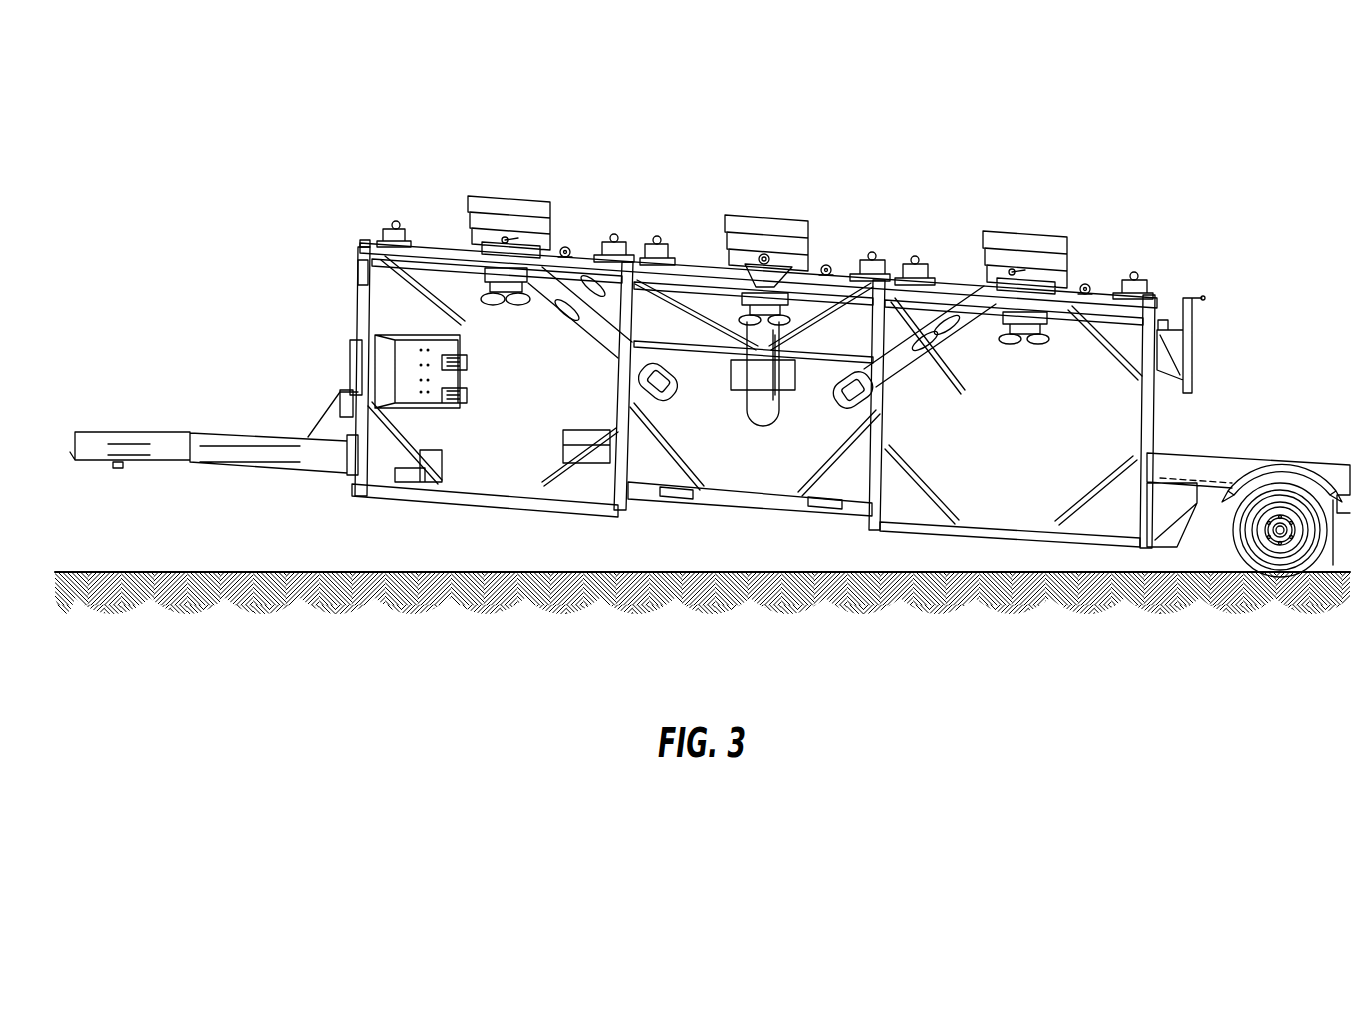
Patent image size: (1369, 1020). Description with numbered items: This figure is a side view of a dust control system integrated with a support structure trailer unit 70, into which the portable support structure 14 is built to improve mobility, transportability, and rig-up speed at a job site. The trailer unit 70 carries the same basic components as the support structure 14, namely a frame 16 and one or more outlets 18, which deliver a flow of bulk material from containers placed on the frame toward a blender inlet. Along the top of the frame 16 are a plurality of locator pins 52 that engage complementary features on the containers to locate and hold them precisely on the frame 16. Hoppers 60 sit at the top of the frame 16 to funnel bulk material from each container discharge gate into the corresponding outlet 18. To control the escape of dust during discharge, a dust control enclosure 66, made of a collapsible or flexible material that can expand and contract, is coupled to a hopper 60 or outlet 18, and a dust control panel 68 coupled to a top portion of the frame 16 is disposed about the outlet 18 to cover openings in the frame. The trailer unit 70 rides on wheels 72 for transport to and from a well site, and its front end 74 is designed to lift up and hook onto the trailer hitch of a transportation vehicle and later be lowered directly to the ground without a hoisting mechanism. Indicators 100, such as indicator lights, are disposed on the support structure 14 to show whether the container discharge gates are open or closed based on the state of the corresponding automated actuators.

The support structure 14 is at (212, 152).
The frame 16 is at (877, 313).
The outlet 18 is at (587, 342).
The locator pin 52 is at (396, 222).
The hopper 60 is at (470, 248).
The dust control enclosure 66 is at (515, 275).
The dust control panel 68 is at (583, 250).
The support structure trailer unit 70 is at (213, 338).
The wheels 72 is at (1283, 480).
The front end 74 is at (100, 432).
The indicator 100 is at (520, 283).